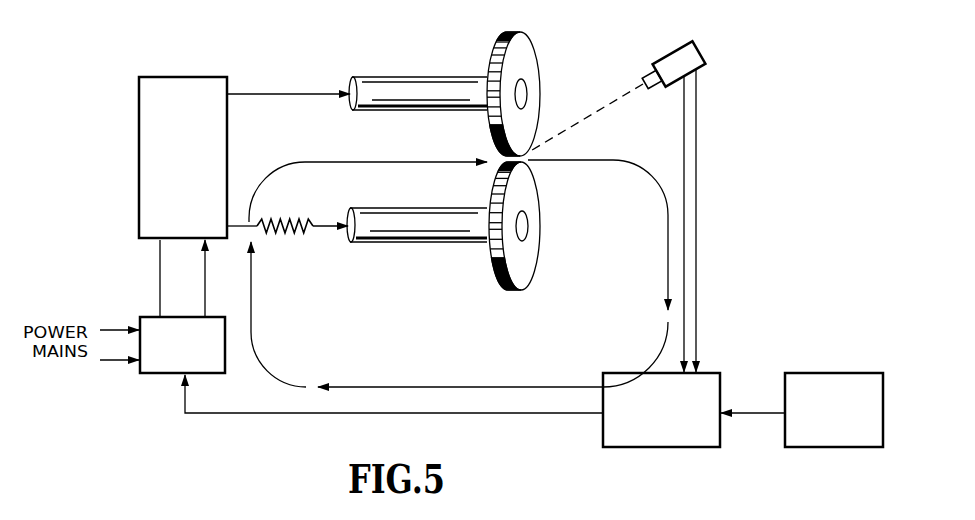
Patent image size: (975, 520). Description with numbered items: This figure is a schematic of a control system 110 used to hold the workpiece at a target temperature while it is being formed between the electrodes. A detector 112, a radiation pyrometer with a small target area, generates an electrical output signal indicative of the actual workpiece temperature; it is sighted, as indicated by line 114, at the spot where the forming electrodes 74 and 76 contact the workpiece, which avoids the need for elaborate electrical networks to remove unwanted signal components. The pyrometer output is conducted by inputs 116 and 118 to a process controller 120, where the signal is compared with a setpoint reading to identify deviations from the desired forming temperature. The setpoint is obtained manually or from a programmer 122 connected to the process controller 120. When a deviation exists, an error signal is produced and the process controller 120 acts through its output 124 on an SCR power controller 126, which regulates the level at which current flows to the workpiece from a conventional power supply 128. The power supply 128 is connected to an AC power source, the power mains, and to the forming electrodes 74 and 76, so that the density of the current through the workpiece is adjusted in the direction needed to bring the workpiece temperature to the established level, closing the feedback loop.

The forming electrode 74 is at (487, 50).
The forming electrode 76 is at (533, 254).
The control system 110 is at (348, 55).
The detector 112 is at (694, 60).
The line 114 is at (612, 102).
The input 116 is at (685, 185).
The input 118 is at (697, 225).
The process controller 120 is at (643, 420).
The programmer 122 is at (820, 420).
The output 124 is at (333, 414).
The SCR power controller 126 is at (167, 356).
The power supply 128 is at (167, 174).